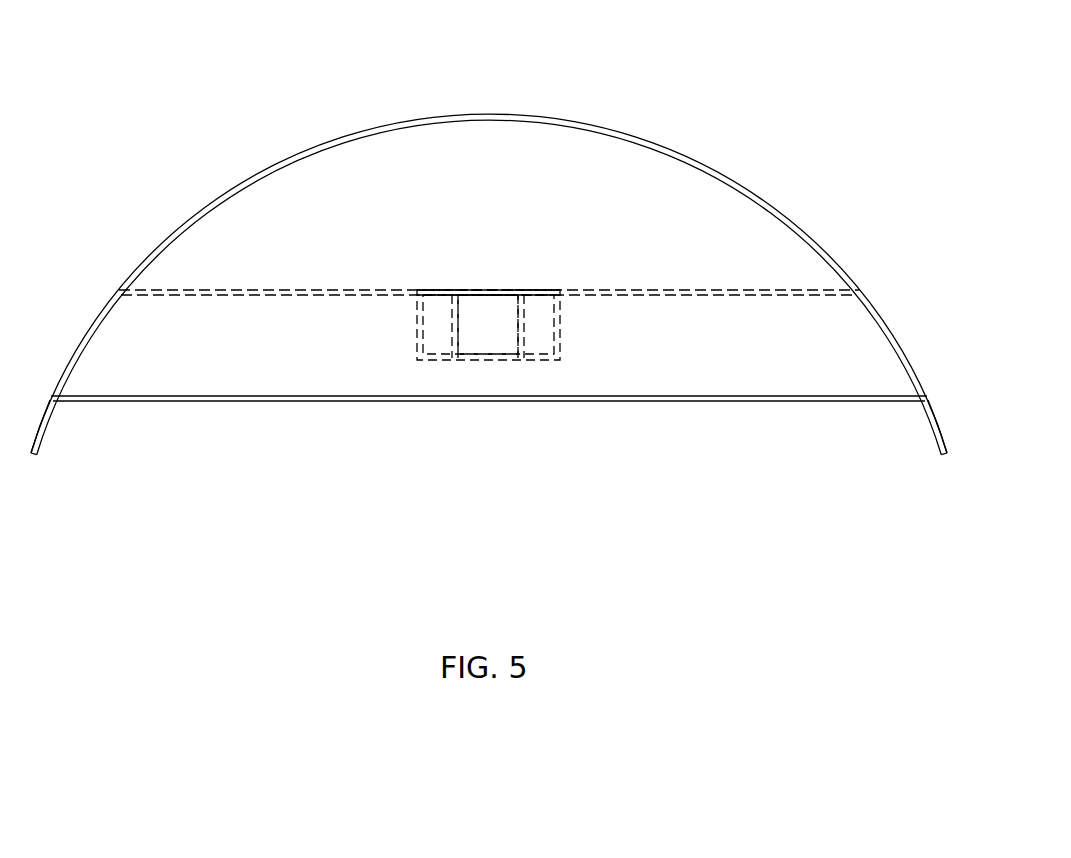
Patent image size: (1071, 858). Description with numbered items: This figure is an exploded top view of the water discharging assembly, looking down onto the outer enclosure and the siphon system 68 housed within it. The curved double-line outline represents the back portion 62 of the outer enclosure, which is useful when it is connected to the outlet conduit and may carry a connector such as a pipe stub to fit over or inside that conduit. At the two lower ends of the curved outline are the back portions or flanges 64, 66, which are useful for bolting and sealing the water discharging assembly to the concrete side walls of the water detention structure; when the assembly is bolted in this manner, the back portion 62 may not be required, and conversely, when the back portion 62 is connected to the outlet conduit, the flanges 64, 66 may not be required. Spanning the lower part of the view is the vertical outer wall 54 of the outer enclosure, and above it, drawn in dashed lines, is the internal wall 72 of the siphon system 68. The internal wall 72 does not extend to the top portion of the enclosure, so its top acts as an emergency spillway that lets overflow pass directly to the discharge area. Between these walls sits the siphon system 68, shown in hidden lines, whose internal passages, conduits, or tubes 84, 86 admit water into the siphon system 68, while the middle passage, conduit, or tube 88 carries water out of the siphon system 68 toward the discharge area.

The back portion 62 is at (637, 137).
The back portion or flange 64 is at (50, 431).
The back portion or flange 66 is at (928, 430).
The vertical outer wall 54 is at (672, 400).
The internal wall 72 is at (663, 289).
The siphon system 68 is at (412, 280).
The internal passage, conduit, or tube 84 is at (440, 308).
The internal passage, conduit, or tube 86 is at (540, 308).
The middle passage, conduit, or tube 88 is at (488, 310).